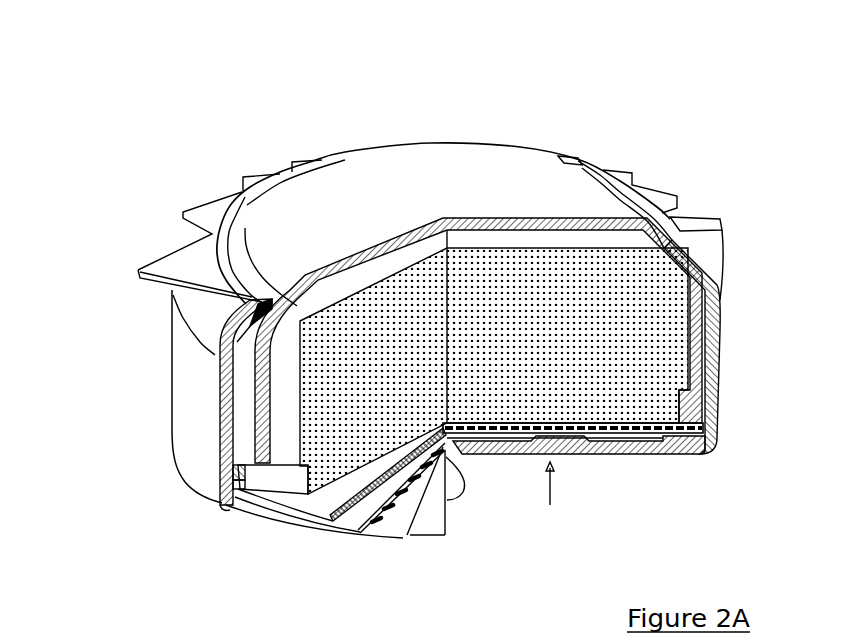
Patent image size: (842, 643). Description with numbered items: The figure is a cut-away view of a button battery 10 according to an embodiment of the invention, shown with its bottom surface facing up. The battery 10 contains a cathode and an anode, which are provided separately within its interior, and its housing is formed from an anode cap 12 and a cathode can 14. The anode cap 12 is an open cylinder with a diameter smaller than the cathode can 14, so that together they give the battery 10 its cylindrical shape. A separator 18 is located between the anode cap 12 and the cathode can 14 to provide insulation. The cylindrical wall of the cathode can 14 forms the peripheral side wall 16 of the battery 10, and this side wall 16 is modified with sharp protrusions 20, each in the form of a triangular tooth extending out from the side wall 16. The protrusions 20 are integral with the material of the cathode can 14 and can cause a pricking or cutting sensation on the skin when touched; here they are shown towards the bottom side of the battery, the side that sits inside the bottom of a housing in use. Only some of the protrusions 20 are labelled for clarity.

The button battery 10 is at (123, 84).
The anode cap 12 is at (504, 166).
The cathode can 14 is at (198, 318).
The peripheral side wall 16 is at (226, 402).
The separator 18 is at (231, 498).
The protrusions 20 is at (697, 212).